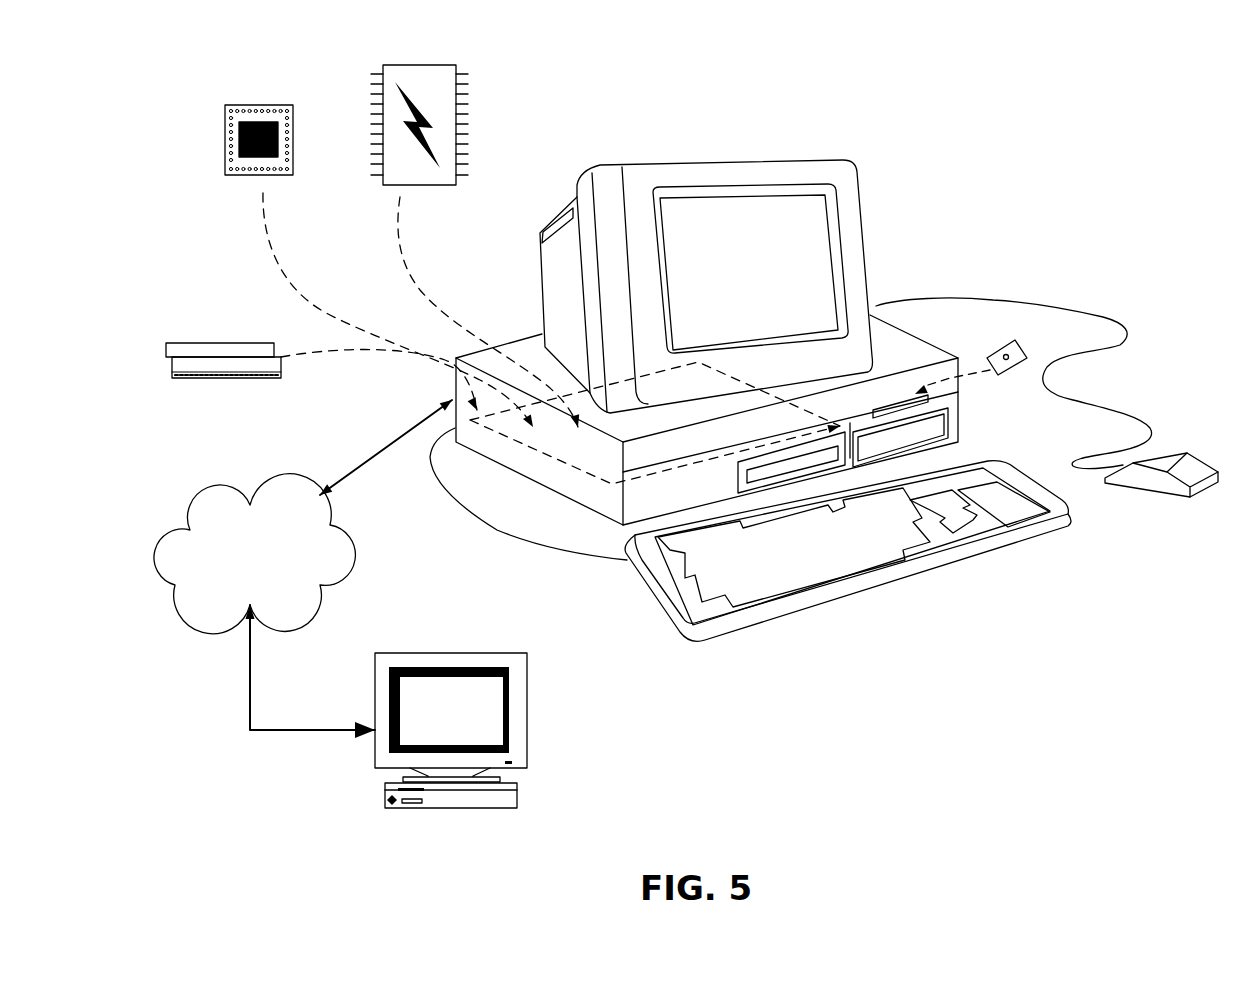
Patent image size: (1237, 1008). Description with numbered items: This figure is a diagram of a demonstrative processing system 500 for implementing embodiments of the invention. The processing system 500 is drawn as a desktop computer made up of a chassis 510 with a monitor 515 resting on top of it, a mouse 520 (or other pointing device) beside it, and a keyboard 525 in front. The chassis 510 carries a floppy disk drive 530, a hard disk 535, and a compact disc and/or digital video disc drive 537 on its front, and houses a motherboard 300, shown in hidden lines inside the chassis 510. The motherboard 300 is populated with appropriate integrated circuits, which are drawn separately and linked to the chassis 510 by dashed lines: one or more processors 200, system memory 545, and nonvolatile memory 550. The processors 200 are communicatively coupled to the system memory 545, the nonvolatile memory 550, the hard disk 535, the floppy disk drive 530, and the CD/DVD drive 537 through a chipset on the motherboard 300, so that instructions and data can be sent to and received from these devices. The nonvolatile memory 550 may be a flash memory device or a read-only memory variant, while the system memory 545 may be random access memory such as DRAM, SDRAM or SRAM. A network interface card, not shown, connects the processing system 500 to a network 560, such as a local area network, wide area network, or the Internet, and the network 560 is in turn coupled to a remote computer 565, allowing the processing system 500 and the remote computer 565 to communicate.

The processing system 500 is at (1027, 149).
The processor 200 is at (240, 172).
The nonvolatile memory 550 is at (448, 65).
The system memory 545 is at (220, 343).
The monitor 515 is at (788, 160).
The chassis 510 is at (528, 335).
The motherboard 300 is at (598, 477).
The floppy disk drive 530 is at (885, 404).
The hard disk 535 is at (952, 430).
The CD/DVD drive 537 is at (850, 458).
The mouse 520 is at (1190, 497).
The keyboard 525 is at (790, 612).
The network 560 is at (345, 585).
The remote computer 565 is at (527, 718).